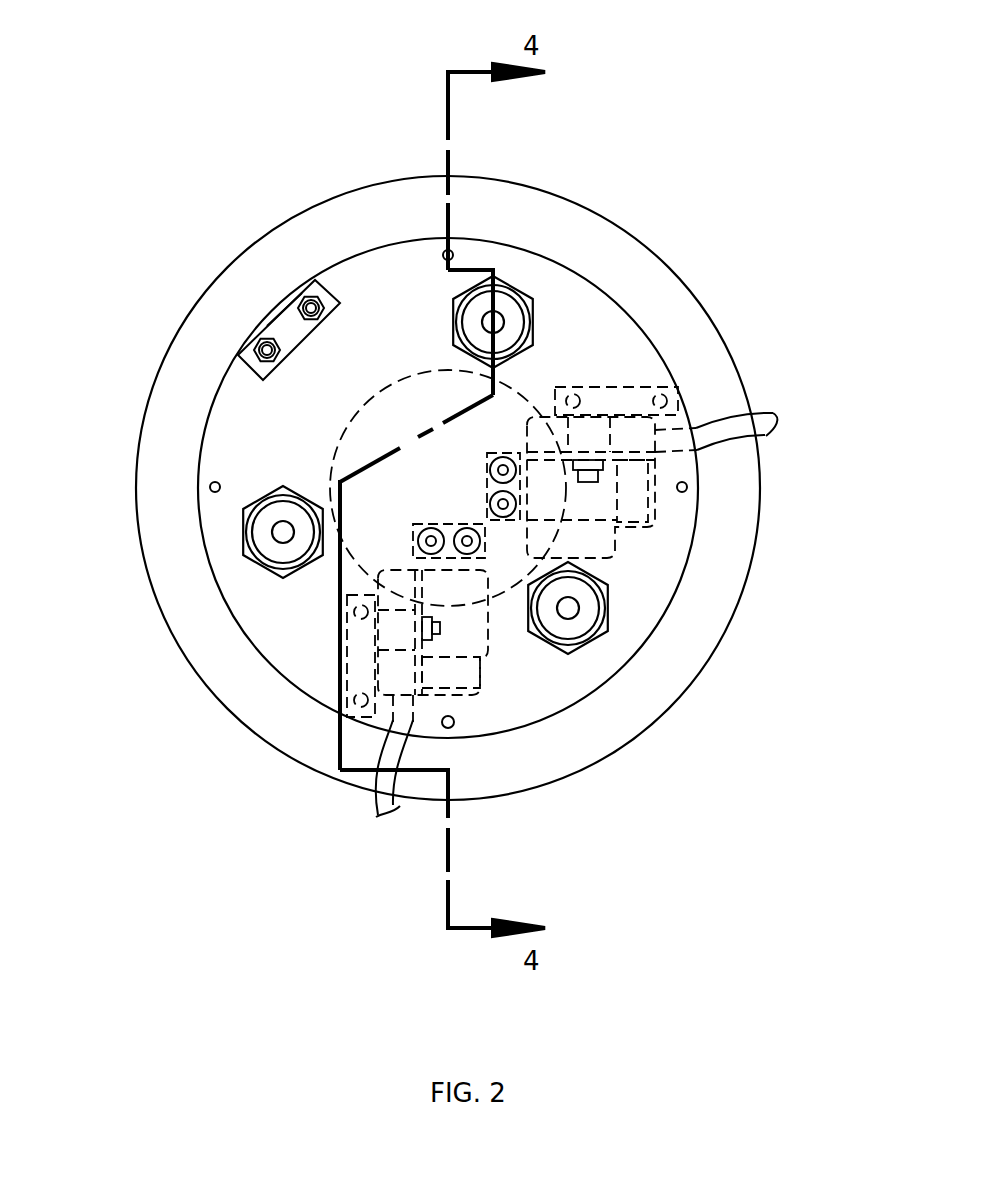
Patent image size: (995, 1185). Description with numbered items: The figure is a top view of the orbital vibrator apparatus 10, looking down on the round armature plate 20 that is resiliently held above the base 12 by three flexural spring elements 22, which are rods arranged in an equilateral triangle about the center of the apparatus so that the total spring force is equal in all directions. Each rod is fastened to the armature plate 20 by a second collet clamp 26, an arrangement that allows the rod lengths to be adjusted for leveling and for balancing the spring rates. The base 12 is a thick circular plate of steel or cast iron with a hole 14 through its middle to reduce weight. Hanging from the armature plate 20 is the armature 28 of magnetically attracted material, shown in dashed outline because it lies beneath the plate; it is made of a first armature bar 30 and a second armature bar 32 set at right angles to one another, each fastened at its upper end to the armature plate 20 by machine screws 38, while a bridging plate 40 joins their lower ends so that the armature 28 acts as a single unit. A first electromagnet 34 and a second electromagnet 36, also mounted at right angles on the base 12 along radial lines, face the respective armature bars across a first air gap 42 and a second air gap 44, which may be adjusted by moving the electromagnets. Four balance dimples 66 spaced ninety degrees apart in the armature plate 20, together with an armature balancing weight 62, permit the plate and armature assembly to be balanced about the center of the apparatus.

The orbital vibrator apparatus 10 is at (362, 69).
The base 12 is at (448, 461).
The hole 14 is at (428, 467).
The armature plate 20 is at (583, 201).
The flexural spring elements 22 is at (503, 320).
The second collet clamp 26 is at (526, 294).
The armature 28 is at (413, 441).
The first armature bar 30 is at (485, 477).
The second armature bar 32 is at (425, 525).
The first electromagnet 34 is at (670, 441).
The second electromagnet 36 is at (388, 668).
The machine screws 38 is at (503, 505).
The bridging plate 40 is at (423, 473).
The first air gap 42 is at (555, 398).
The second air gap 44 is at (336, 585).
The armature balancing weight 62 is at (230, 306).
The balance dimples 66 is at (835, 535).